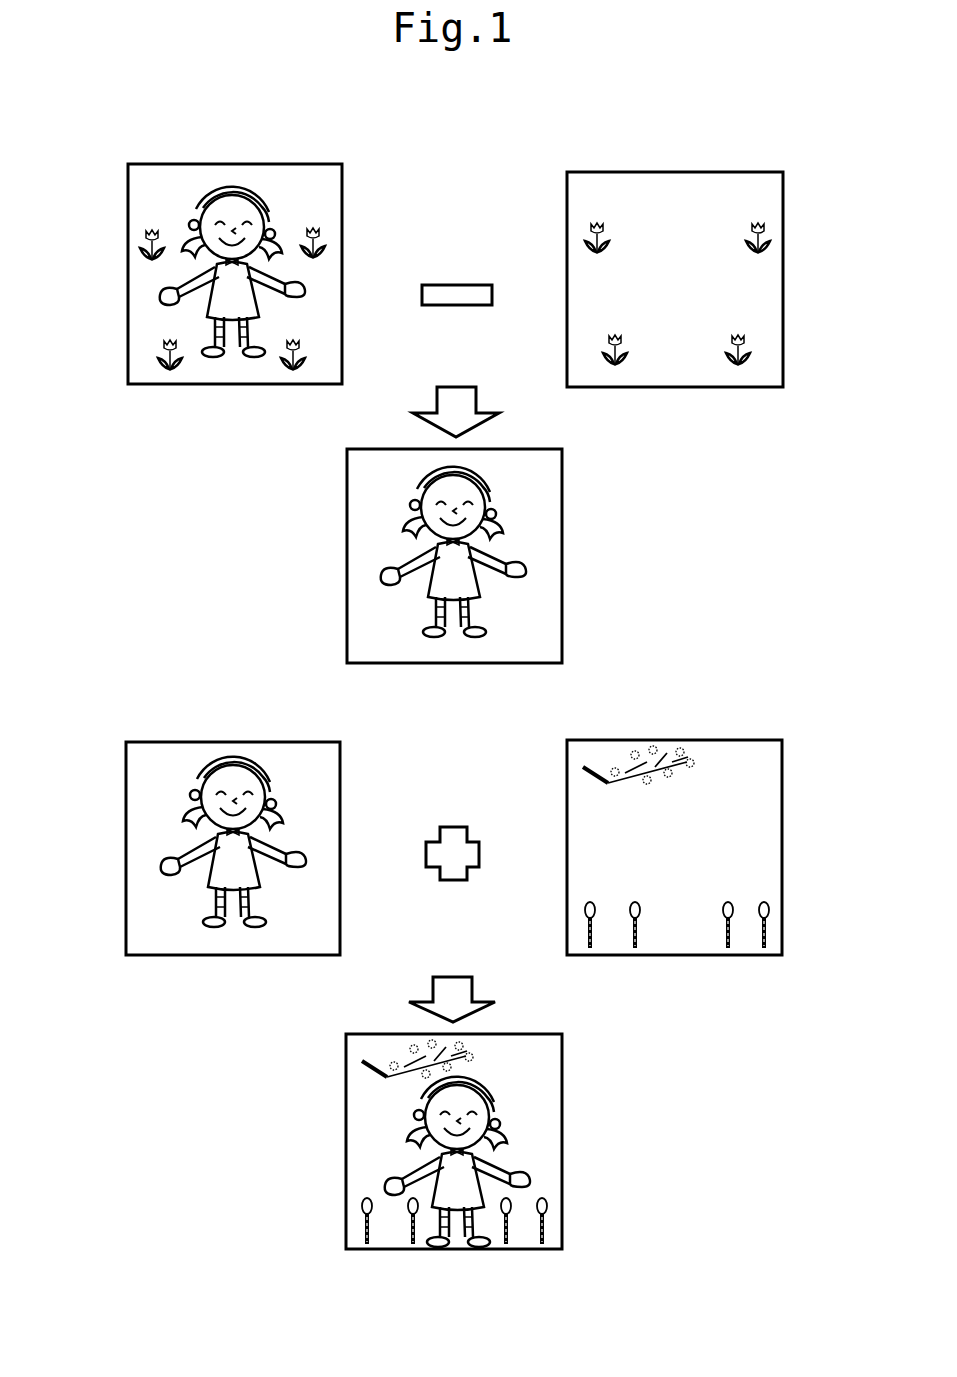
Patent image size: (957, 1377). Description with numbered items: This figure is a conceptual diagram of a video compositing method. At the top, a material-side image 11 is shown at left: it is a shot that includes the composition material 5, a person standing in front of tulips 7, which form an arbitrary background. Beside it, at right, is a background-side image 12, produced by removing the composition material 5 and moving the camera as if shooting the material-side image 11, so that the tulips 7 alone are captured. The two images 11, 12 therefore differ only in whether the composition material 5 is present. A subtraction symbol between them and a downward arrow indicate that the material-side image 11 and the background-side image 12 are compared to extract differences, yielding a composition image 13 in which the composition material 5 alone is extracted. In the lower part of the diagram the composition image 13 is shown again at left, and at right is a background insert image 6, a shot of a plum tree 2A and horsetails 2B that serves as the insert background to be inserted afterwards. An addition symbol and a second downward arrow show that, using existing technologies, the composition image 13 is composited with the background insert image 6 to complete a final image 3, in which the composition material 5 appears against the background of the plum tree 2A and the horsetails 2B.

The material-side image 11 is at (127, 273).
The background-side image 12 is at (680, 386).
The composition image 13 is at (347, 543).
The tulips 7 is at (320, 234).
The figure 5 is at (228, 285).
The background insert image 6 is at (783, 813).
The plum tree 2A is at (732, 930).
The horsetails 2B is at (670, 768).
The final image 3 is at (344, 1122).